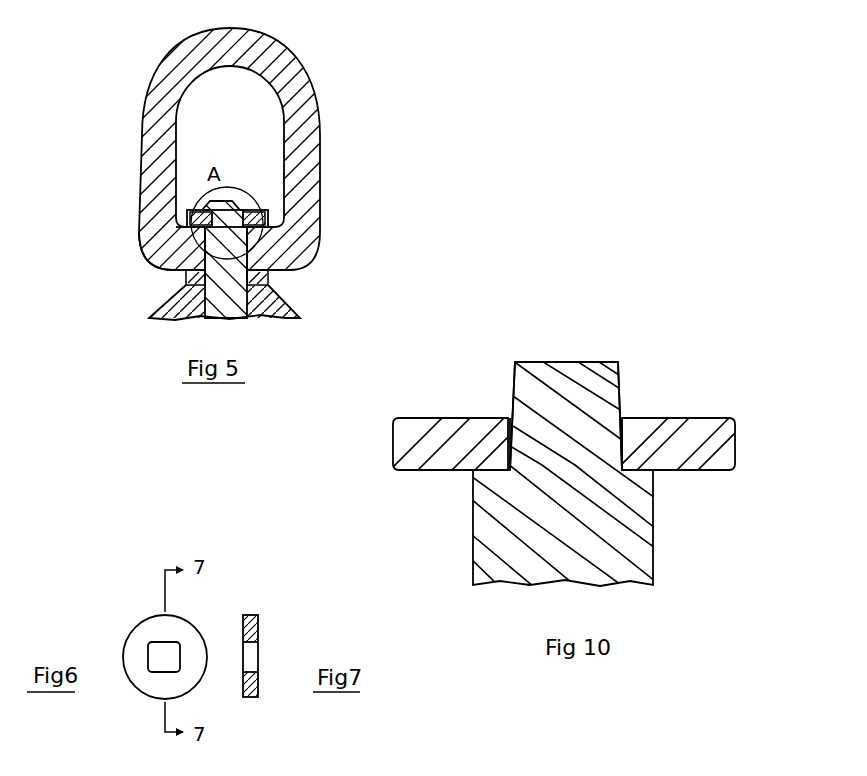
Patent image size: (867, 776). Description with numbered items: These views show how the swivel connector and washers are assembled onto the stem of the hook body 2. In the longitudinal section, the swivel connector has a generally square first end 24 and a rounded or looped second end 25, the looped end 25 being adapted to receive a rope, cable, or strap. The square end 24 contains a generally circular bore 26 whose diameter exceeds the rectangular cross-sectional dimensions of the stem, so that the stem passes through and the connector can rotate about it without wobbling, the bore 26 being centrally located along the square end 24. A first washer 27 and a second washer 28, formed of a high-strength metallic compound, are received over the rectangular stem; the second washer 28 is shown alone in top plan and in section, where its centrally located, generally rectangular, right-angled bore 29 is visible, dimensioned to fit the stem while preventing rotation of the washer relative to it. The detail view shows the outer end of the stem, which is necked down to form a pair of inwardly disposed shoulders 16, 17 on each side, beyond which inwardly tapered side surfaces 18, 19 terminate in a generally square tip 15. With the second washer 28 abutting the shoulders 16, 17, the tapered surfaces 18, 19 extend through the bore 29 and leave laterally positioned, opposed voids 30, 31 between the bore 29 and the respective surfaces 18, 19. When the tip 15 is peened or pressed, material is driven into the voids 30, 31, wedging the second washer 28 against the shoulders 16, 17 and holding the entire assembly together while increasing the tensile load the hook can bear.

In FIG. 5, the hook body 2 is at (272, 310).
In FIG. 5, the tip 15 is at (237, 208).
In FIG. 10, the tip 15 is at (553, 362).
In FIG. 10, the shoulder 16 is at (483, 471).
In FIG. 10, the shoulder 17 is at (653, 473).
In FIG. 10, the tapered side surface 18 is at (513, 388).
In FIG. 10, the tapered side surface 19 is at (618, 378).
In FIG. 5, the first end 24 is at (180, 267).
In FIG. 5, the second end 25 is at (287, 57).
In FIG. 5, the circular bore 26 is at (207, 252).
In FIG. 5, the first washer 27 is at (268, 271).
In FIG. 5, the second washer 28 is at (271, 215).
In FIG. 6, the second washer 28 is at (150, 618).
In FIG. 7, the second washer 28 is at (253, 628).
In FIG. 10, the second washer 28 is at (705, 428).
In FIG. 6, the bore 29 is at (158, 657).
In FIG. 7, the bore 29 is at (253, 657).
In FIG. 5, the void 30 is at (203, 213).
In FIG. 10, the void 30 is at (507, 423).
In FIG. 5, the void 31 is at (255, 215).
In FIG. 10, the void 31 is at (628, 418).